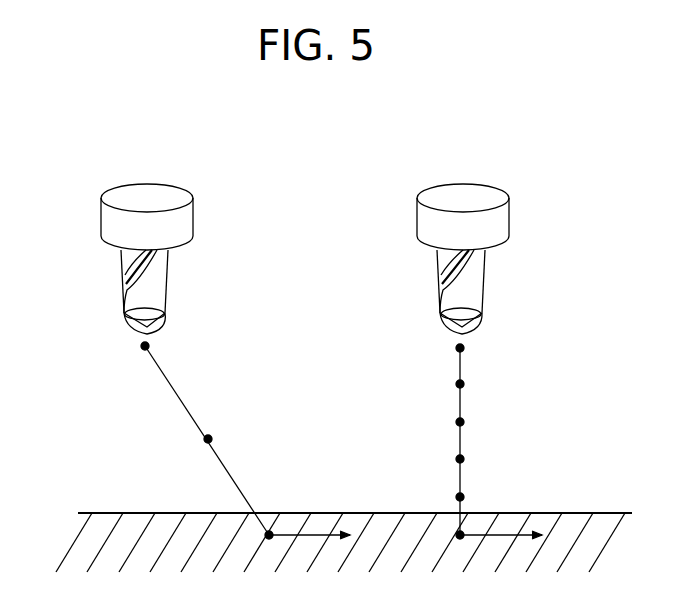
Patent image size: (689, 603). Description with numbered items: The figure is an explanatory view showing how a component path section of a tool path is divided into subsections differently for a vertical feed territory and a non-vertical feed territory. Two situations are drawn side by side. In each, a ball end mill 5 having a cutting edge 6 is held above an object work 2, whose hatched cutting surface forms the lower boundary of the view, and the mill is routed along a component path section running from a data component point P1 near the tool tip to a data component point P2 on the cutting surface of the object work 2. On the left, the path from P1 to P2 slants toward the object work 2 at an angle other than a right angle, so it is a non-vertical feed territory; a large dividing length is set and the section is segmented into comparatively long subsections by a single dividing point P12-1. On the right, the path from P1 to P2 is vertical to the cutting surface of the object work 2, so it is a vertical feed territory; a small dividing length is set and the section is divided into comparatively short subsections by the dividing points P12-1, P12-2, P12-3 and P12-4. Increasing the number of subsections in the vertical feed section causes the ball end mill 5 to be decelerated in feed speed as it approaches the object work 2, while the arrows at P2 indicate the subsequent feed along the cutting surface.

The object work 2 is at (137, 513).
The ball end mill 5 is at (103, 200).
The cutting edge 6 is at (122, 313).
The data component point P1 is at (151, 346).
The data component point P2 is at (264, 536).
The dividing point P12-1 is at (210, 435).
The dividing point P12-2 is at (456, 422).
The dividing point P12-3 is at (464, 458).
The dividing point P12-4 is at (457, 496).